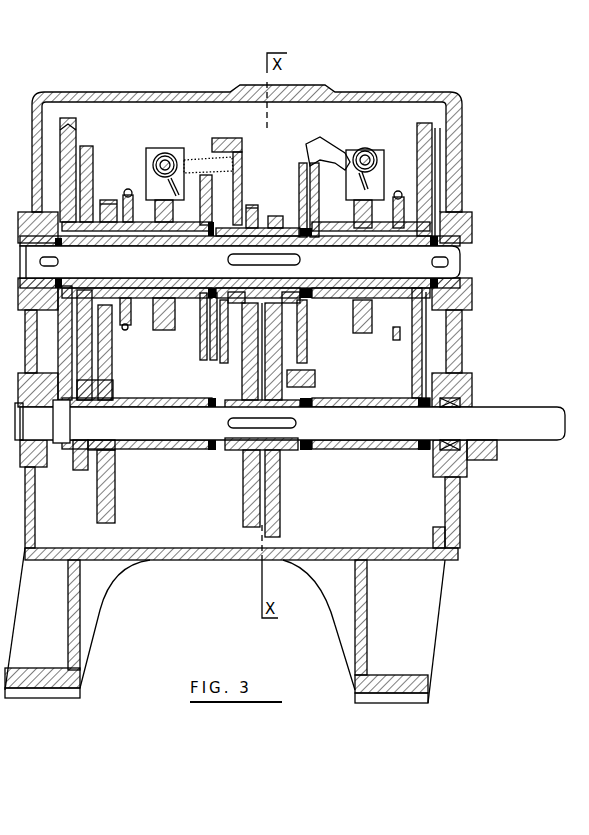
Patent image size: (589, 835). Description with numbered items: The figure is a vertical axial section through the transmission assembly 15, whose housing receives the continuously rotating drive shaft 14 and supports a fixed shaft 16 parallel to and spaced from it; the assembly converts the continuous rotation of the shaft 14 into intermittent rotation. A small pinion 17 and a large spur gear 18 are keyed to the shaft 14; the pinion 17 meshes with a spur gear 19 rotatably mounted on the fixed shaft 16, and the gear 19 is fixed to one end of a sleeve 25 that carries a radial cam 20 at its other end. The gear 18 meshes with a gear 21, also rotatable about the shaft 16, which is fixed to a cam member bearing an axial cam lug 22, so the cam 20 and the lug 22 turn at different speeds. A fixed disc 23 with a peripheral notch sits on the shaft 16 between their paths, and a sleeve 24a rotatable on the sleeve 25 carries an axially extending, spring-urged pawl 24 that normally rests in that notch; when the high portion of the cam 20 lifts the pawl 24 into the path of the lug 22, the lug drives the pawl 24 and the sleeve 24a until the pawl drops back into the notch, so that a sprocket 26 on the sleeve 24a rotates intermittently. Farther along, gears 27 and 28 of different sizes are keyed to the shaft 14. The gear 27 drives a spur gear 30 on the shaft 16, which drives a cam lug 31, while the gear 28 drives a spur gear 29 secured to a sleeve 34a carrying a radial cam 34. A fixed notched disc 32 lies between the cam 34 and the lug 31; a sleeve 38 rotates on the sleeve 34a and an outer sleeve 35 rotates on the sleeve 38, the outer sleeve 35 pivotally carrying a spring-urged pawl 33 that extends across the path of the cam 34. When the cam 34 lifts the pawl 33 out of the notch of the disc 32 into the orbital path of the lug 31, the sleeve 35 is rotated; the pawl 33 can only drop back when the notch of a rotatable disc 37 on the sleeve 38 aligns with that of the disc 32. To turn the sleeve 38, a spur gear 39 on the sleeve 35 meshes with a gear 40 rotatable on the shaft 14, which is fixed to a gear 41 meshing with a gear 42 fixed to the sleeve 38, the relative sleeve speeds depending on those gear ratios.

The shaft 14 is at (526, 420).
The transmission assembly 15 is at (452, 96).
The fixed shaft 16 is at (425, 256).
The pinion 17 is at (415, 448).
The spur gear 18 is at (272, 476).
The spur gear 19 is at (420, 160).
The radial cam 20 is at (318, 186).
The gear 21 is at (276, 216).
The cam lug 22 is at (312, 383).
The fixed disc 23 is at (305, 347).
The pawl 24 is at (318, 150).
The sleeve 24a is at (356, 218).
The sleeve 25 is at (368, 242).
The sprocket 26 is at (395, 335).
The gear 27 is at (243, 494).
The gear 28 is at (60, 445).
The spur gear 29 is at (70, 120).
The spur gear 30 is at (251, 206).
The cam lug 31 is at (224, 140).
The fixed disc 32 is at (226, 365).
The pawl 33 is at (207, 160).
The radial cam 34 is at (215, 356).
The sleeve 34a is at (106, 240).
The outer sleeve 35 is at (138, 212).
The rotatable disc 37 is at (205, 350).
The sleeve 38 is at (182, 315).
The spur gear 39 is at (105, 200).
The gear 40 is at (106, 504).
The gear 41 is at (80, 452).
The gear 42 is at (88, 148).